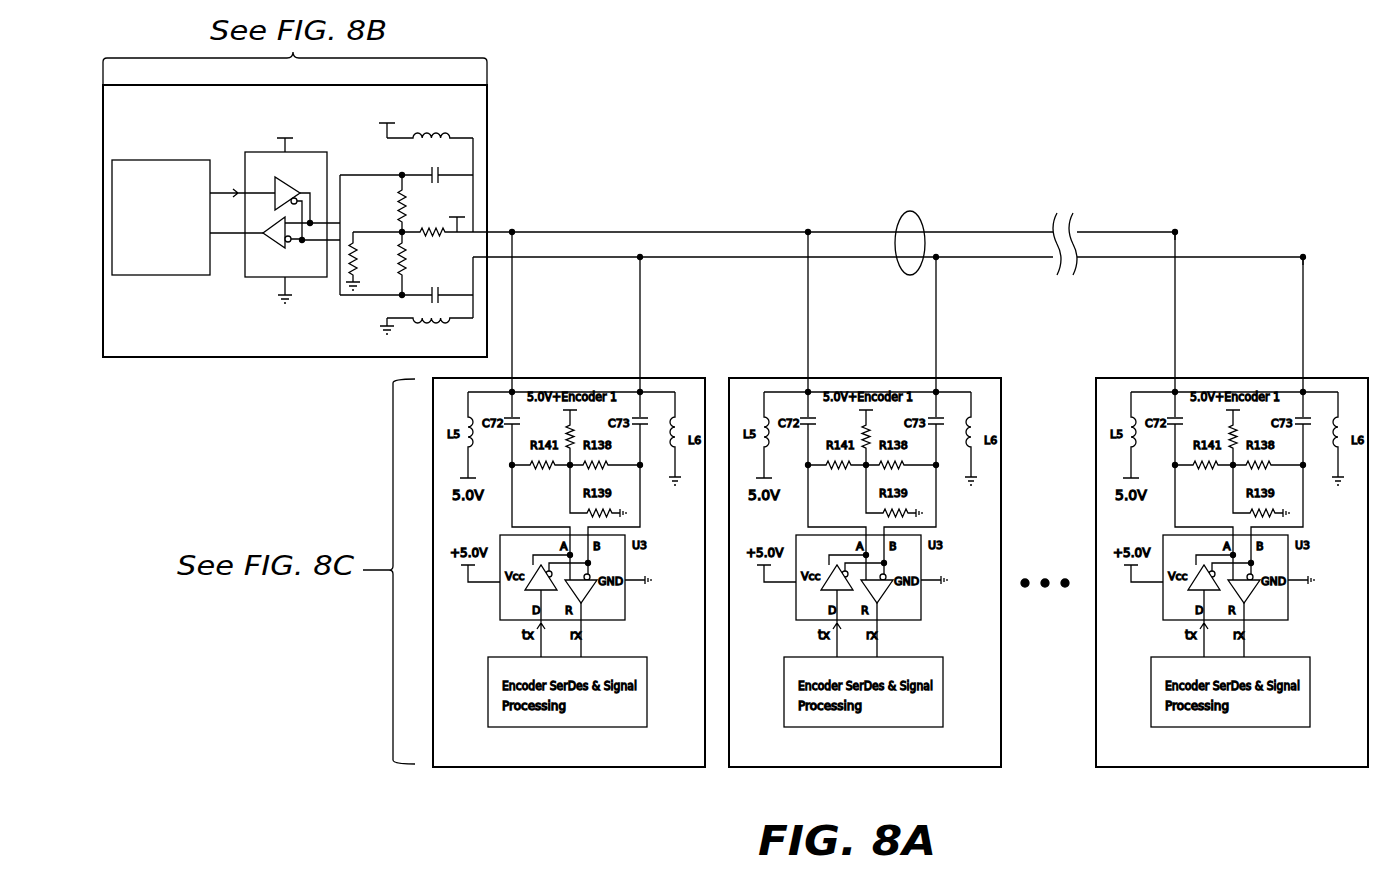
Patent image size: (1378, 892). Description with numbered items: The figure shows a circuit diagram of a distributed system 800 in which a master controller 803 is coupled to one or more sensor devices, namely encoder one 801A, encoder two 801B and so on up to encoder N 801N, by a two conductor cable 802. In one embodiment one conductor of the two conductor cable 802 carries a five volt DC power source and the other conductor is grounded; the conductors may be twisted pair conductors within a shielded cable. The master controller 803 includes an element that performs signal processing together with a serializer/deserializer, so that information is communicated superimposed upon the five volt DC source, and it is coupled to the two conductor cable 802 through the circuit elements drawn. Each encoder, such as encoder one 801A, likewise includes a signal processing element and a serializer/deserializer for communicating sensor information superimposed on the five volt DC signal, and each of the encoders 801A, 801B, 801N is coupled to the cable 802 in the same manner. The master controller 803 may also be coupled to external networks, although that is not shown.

The distributed system 800 is at (1121, 152).
The two conductor cable 802 is at (913, 212).
The master controller 803 is at (487, 135).
The encoder 1 801A is at (524, 379).
The encoder 2 801B is at (820, 379).
The encoder N 801N is at (1190, 379).